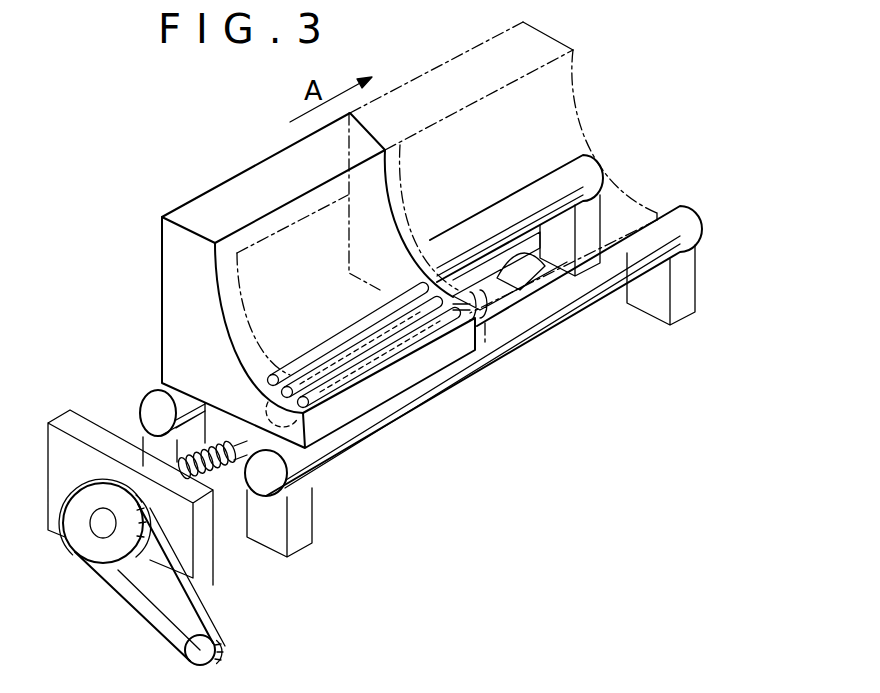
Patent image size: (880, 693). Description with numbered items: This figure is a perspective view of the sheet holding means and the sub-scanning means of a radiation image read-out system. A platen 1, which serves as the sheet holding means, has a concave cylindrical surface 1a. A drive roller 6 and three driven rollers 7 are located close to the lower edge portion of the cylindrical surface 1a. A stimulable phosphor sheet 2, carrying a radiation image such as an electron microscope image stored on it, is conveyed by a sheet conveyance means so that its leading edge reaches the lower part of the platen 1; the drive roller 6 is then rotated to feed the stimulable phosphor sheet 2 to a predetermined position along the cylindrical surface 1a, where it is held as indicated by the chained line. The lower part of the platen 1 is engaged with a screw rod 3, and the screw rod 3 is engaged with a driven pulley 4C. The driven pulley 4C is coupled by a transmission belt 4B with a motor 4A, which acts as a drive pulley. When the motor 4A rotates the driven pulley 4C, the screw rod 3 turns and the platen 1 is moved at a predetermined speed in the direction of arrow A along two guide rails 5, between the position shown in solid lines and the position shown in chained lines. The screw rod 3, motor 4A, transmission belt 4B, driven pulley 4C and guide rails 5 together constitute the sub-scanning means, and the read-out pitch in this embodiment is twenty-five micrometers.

The platen 1 is at (220, 203).
The concave cylindrical surface 1a is at (228, 306).
The stimulable phosphor sheet 2 is at (291, 230).
The screw rod 3 is at (214, 482).
The motor 4A is at (222, 641).
The transmission belt 4B is at (212, 614).
The driven pulley 4C is at (98, 553).
The guide rails 5 is at (145, 398).
The drive roller 6 is at (268, 413).
The driven rollers 7 is at (371, 341).